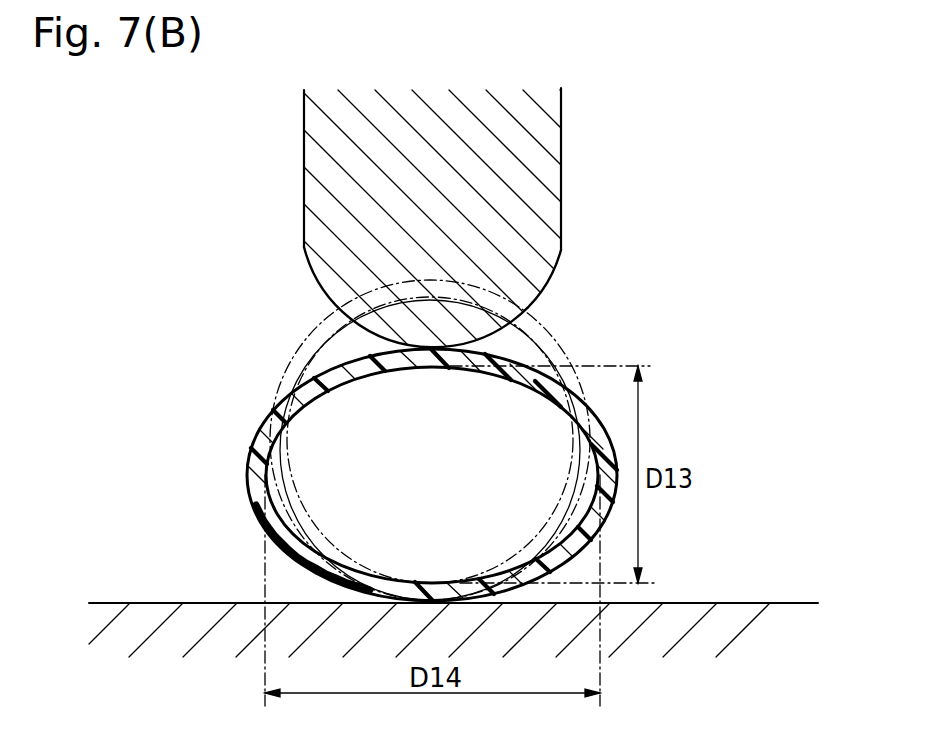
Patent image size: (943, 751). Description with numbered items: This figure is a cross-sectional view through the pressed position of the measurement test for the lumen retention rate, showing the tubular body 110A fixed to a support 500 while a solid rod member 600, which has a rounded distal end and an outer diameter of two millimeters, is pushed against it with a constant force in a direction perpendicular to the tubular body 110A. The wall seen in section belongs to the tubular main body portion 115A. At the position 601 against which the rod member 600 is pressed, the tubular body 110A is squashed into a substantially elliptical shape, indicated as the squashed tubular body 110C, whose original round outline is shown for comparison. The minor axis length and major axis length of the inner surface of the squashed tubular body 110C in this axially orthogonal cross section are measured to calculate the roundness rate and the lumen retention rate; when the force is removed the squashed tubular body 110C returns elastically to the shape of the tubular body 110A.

The rod member 600 is at (561, 147).
The position against which the rod member is pressed 601 is at (546, 249).
The tubular body 110A is at (296, 363).
The tubular main body portion 115A is at (268, 414).
The squashed tubular body 110C is at (249, 483).
The support 500 is at (765, 600).